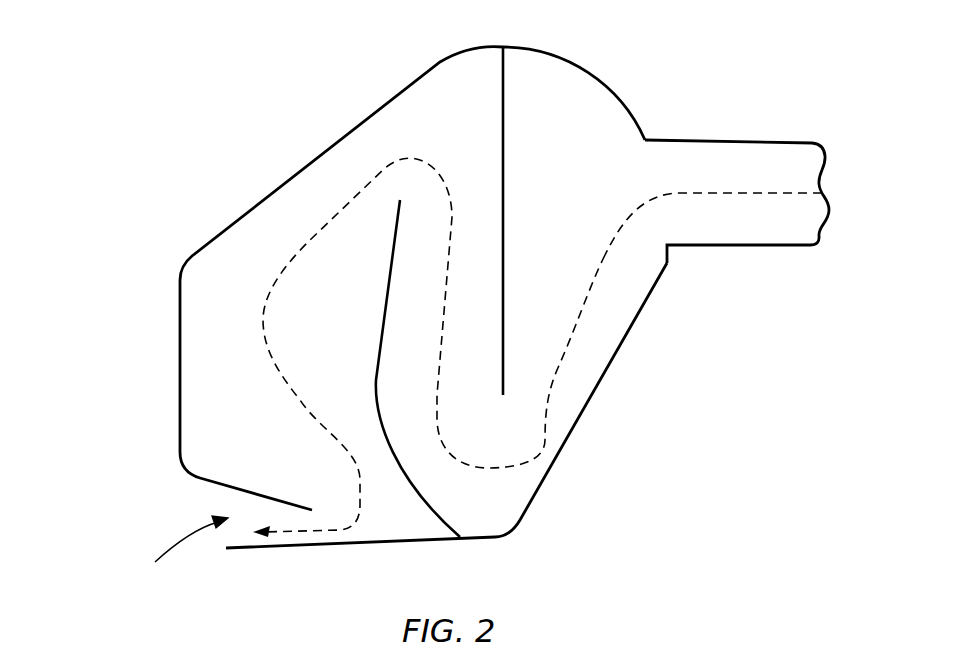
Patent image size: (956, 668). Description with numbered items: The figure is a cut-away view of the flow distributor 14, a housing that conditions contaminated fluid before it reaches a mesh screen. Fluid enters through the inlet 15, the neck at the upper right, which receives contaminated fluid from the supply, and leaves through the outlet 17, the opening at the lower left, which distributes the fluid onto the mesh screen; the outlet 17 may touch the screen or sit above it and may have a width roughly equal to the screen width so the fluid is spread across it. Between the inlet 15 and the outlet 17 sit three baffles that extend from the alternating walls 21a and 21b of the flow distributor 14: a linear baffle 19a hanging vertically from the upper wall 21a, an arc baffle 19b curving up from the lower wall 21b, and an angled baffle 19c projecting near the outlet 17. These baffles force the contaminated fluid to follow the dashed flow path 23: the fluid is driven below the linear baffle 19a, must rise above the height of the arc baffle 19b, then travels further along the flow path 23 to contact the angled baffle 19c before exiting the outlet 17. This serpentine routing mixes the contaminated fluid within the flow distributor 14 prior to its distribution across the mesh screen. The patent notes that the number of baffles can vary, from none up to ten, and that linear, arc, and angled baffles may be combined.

The flow distributor 14 is at (119, 202).
The inlet 15 is at (757, 143).
The outlet 17 is at (177, 554).
The linear baffle 19a is at (504, 120).
The arc baffle 19b is at (388, 272).
The angled baffle 19c is at (248, 490).
The wall 21a is at (338, 143).
The wall 21b is at (548, 478).
The flow path 23 is at (555, 367).